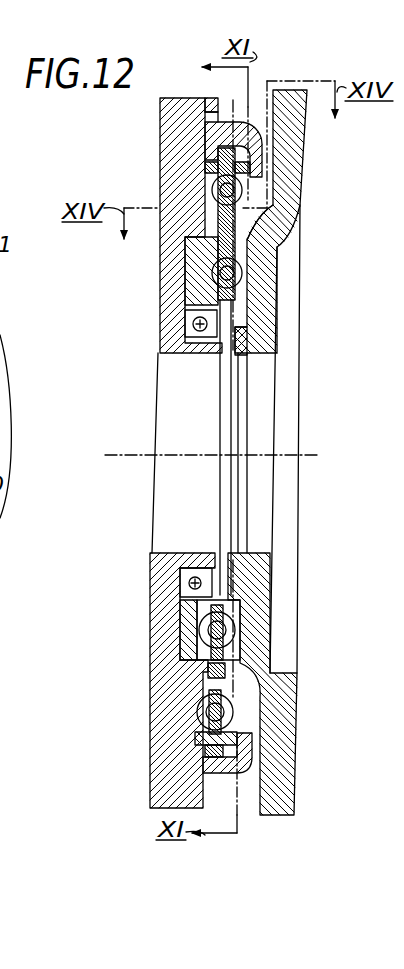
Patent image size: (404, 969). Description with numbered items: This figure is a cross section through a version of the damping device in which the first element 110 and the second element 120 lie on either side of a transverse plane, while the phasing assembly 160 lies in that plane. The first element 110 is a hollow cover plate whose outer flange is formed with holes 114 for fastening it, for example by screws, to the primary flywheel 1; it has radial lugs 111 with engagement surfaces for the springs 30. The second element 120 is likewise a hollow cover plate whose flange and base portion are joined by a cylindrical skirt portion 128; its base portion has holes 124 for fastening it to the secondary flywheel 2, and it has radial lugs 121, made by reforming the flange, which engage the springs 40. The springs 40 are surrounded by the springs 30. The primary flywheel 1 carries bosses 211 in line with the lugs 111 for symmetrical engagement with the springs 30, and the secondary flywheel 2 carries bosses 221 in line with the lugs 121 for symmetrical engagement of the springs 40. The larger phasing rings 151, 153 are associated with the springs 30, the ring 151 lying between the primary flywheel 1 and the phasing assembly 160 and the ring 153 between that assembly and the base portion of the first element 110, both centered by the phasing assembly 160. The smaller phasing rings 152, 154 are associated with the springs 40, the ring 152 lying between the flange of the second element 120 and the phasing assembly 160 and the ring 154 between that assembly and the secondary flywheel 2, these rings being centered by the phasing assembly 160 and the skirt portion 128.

The primary flywheel 1 is at (157, 190).
The secondary flywheel 2 is at (305, 228).
The springs 30 is at (197, 703).
The springs 40 is at (192, 620).
The first element 110 is at (232, 126).
The radial lugs 111 is at (240, 205).
The holes 114 is at (238, 88).
The second element 120 is at (238, 360).
The radial lugs 121 is at (212, 300).
The holes 124 is at (240, 336).
The cylindrical skirt portion 128 is at (190, 612).
The phasing ring 151 is at (212, 160).
The phasing ring 152 is at (200, 668).
The phasing ring 153 is at (243, 162).
The phasing ring 154 is at (246, 690).
The phasing assembly 160 is at (246, 230).
The bosses 211 is at (165, 236).
The bosses 221 is at (240, 292).